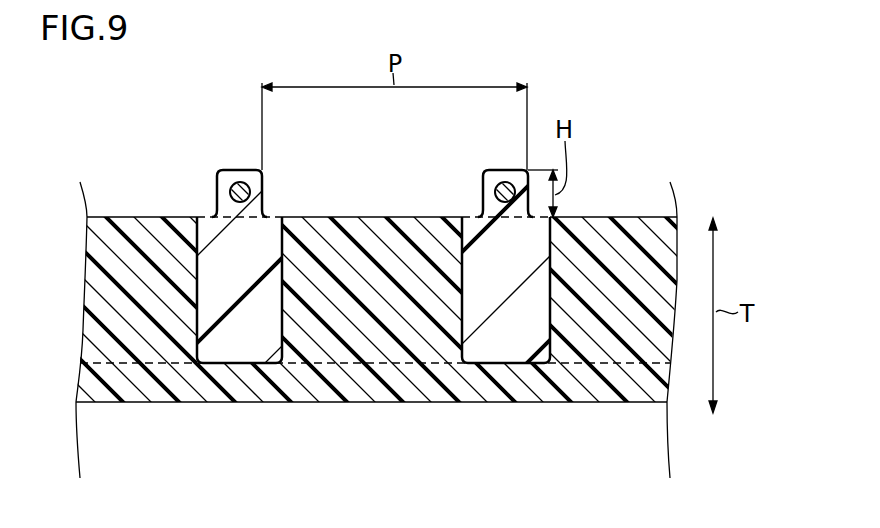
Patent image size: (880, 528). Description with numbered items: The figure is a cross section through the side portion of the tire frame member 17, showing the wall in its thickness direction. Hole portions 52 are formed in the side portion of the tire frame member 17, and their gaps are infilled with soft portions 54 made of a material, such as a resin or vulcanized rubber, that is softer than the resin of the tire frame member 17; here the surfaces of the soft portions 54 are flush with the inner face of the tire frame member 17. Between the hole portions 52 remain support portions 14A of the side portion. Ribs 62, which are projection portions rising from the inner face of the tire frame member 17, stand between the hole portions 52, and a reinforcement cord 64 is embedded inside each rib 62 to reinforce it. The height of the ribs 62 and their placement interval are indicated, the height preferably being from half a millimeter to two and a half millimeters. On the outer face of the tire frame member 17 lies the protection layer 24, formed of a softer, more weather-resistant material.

The tire frame member 17 is at (193, 215).
The rib 62 is at (207, 215).
The reinforcement cord 64 is at (245, 182).
The support portion 14A is at (268, 242).
The soft portion 54 is at (102, 230).
The hole portion 52 is at (170, 273).
The protection layer 24 is at (330, 403).